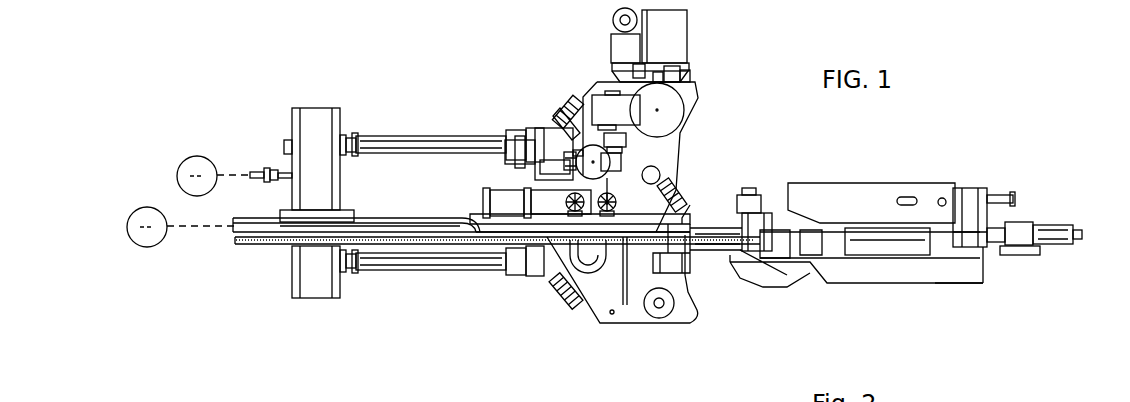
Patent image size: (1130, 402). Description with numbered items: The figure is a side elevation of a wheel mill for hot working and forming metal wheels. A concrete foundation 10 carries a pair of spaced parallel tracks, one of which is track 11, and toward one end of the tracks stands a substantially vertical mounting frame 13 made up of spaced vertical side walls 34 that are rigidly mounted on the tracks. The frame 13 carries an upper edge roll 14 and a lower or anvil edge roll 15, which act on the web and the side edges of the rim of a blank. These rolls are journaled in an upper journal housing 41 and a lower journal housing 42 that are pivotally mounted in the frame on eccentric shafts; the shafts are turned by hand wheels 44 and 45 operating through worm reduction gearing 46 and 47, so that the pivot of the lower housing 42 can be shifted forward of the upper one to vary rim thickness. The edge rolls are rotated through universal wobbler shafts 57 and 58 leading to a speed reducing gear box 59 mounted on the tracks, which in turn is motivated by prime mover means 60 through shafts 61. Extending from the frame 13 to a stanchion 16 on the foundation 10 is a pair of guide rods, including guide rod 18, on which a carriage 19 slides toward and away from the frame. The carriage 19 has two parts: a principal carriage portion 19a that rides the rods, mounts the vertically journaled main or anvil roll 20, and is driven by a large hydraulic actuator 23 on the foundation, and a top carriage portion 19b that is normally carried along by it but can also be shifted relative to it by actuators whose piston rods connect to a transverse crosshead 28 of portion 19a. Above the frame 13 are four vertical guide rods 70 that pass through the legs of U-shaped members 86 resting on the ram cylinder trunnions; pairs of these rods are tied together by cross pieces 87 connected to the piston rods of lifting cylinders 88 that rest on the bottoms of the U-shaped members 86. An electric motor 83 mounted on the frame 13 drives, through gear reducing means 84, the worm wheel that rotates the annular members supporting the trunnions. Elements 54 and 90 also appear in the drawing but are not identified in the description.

The foundation 10 is at (252, 246).
The track 11 is at (404, 222).
The mounting frame 13 is at (668, 136).
The upper edge roll 14 is at (685, 182).
The lower or anvil edge roll 15 is at (694, 204).
The stanchion 16 is at (1020, 222).
The guide rod 18 is at (905, 258).
The carriage 19 is at (856, 229).
The principal carriage portion 19a is at (872, 283).
The top carriage portion 19b is at (838, 196).
The main or anvil roll 20 is at (752, 192).
The hydraulic actuator 23 is at (1055, 226).
The crosshead 28 is at (984, 190).
The side wall 34 is at (637, 314).
The journal housing 41 is at (574, 118).
The journal housing 42 is at (565, 300).
The hand wheel 44 is at (565, 202).
The hand wheel 45 is at (616, 203).
The worm reduction gearing 46 is at (608, 258).
The worm reduction gearing 47 is at (610, 162).
The block 54 is at (492, 196).
The universal wobbler shaft 57 is at (402, 136).
The universal wobbler shaft 58 is at (432, 270).
The speed reducing gear box 59 is at (344, 194).
The prime mover means 60 is at (197, 162).
The shaft 61 is at (258, 170).
The guide rod 70 is at (684, 72).
The electric motor 83 is at (555, 142).
The gear reducing means 84 is at (586, 120).
The U-shaped member 86 is at (692, 77).
The cross piece 87 is at (612, 73).
The lifting cylinder 88 is at (666, 67).
The motor 90 is at (680, 28).